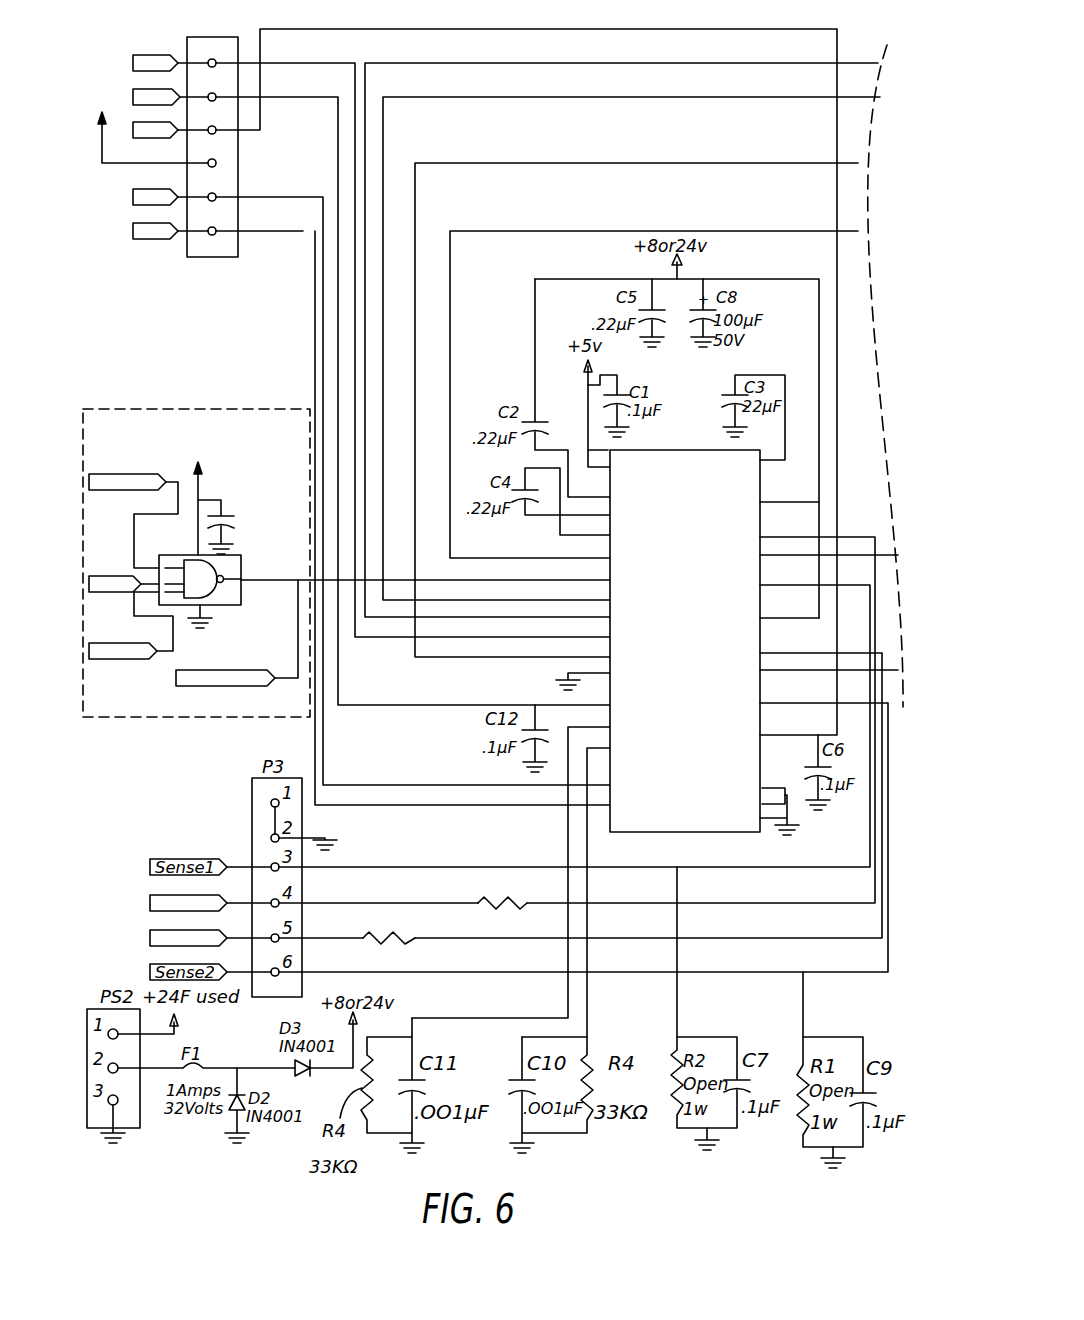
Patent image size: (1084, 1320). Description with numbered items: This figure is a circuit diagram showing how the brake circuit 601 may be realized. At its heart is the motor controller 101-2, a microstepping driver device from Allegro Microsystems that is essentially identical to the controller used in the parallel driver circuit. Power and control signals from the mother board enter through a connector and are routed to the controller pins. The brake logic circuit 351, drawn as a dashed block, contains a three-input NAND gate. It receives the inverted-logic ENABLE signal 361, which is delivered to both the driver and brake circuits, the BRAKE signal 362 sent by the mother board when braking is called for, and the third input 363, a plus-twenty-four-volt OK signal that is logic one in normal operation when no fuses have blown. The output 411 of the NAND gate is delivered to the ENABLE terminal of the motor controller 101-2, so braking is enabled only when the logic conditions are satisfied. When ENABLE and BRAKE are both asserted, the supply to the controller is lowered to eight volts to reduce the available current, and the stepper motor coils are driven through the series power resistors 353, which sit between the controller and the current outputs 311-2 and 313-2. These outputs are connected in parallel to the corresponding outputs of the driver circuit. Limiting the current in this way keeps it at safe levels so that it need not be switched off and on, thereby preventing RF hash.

The brake circuit 601 is at (264, 341).
The brake logic circuit 351 is at (189, 407).
The third input (+24V OK signal) 363 is at (146, 469).
The BRAKE signal 362 is at (107, 575).
The ENABLE signal 361 is at (121, 660).
The output of the NAND gate 411 is at (279, 578).
The motor controller 101-2 is at (753, 835).
The power resistors 353 is at (495, 866).
The current output 311-2 is at (157, 893).
The current output 313-2 is at (157, 930).